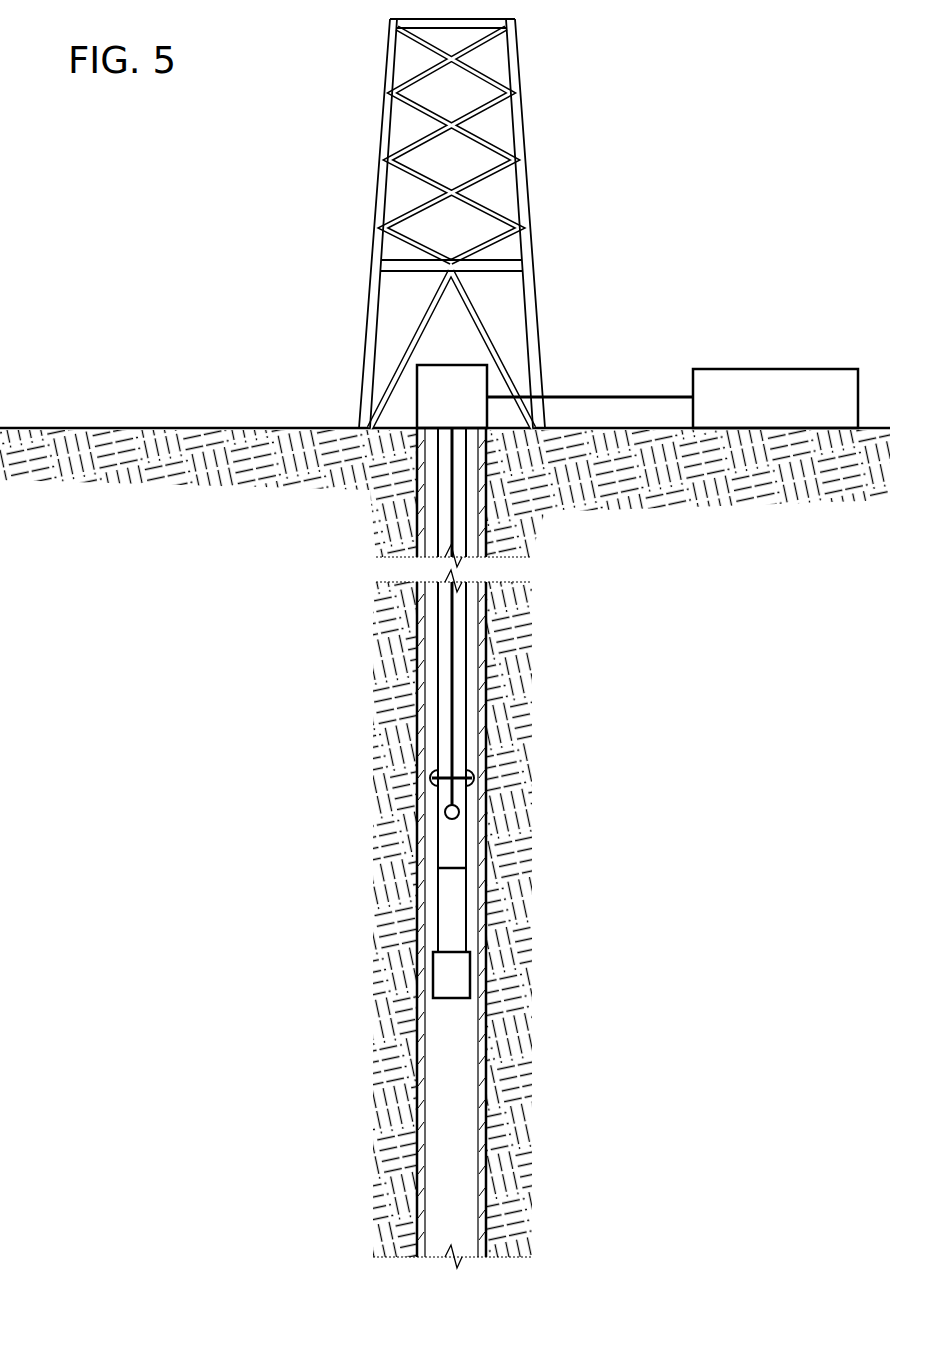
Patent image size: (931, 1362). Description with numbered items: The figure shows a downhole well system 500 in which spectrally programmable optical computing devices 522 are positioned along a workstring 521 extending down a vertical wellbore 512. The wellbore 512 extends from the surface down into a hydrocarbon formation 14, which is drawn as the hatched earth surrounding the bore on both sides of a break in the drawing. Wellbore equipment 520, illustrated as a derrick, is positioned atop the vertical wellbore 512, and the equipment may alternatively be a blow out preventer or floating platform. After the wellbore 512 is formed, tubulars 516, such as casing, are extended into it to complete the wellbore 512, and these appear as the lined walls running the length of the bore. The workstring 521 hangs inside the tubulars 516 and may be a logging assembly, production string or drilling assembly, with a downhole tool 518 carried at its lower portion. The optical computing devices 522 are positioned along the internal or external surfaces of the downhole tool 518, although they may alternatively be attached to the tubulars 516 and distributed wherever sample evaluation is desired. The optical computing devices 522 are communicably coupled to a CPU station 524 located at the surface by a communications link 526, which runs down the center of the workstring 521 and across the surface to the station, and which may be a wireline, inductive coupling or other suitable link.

The downhole well system 500 is at (218, 209).
The wellbore equipment 520 is at (527, 190).
The communications link 526 is at (605, 392).
The CPU station 524 is at (787, 369).
The hydrocarbon formation 14 is at (608, 487).
The tubulars 516 is at (487, 638).
The workstring 521 is at (467, 727).
The spectrally programmable optical computing device 522 is at (430, 776).
The downhole tool 518 is at (452, 836).
The vertical wellbore 512 is at (447, 1040).